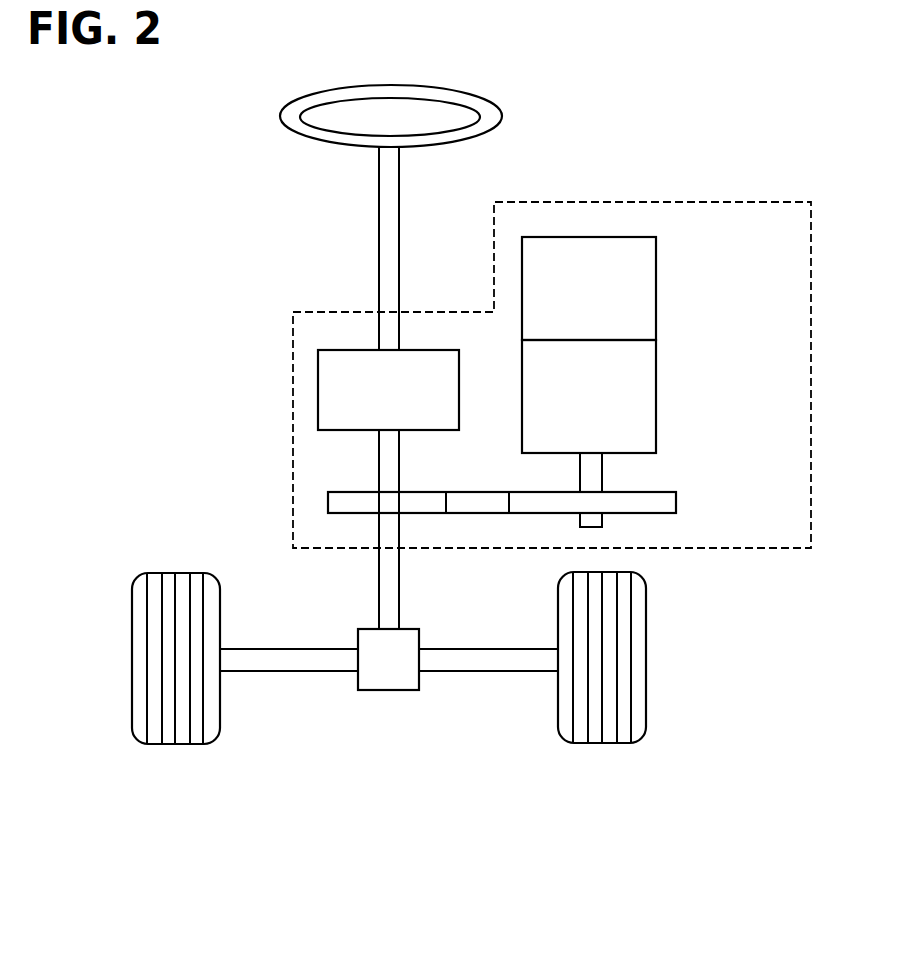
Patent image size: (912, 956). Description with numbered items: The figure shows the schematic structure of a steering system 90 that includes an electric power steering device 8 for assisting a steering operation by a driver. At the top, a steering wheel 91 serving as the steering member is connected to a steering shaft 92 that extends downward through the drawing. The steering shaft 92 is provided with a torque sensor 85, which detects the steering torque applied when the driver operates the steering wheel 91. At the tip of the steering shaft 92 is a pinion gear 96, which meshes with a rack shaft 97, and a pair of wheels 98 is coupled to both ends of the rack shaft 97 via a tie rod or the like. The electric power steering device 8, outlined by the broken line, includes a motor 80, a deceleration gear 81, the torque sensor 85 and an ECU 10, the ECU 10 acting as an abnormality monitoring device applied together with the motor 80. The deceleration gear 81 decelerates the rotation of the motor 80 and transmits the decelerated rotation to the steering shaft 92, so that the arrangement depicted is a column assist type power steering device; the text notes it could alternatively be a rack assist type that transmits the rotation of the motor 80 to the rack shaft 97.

The electric power steering device 8 is at (762, 202).
The ECU 10 is at (657, 290).
The motor 80 is at (657, 397).
The deceleration gear 81 is at (677, 500).
The torque sensor 85 is at (318, 381).
The steering system 90 is at (355, 838).
The steering wheel 91 is at (280, 118).
The steering shaft 92 is at (379, 205).
The pinion gear 96 is at (379, 690).
The rack shaft 97 is at (283, 672).
The wheels 98 is at (192, 745).